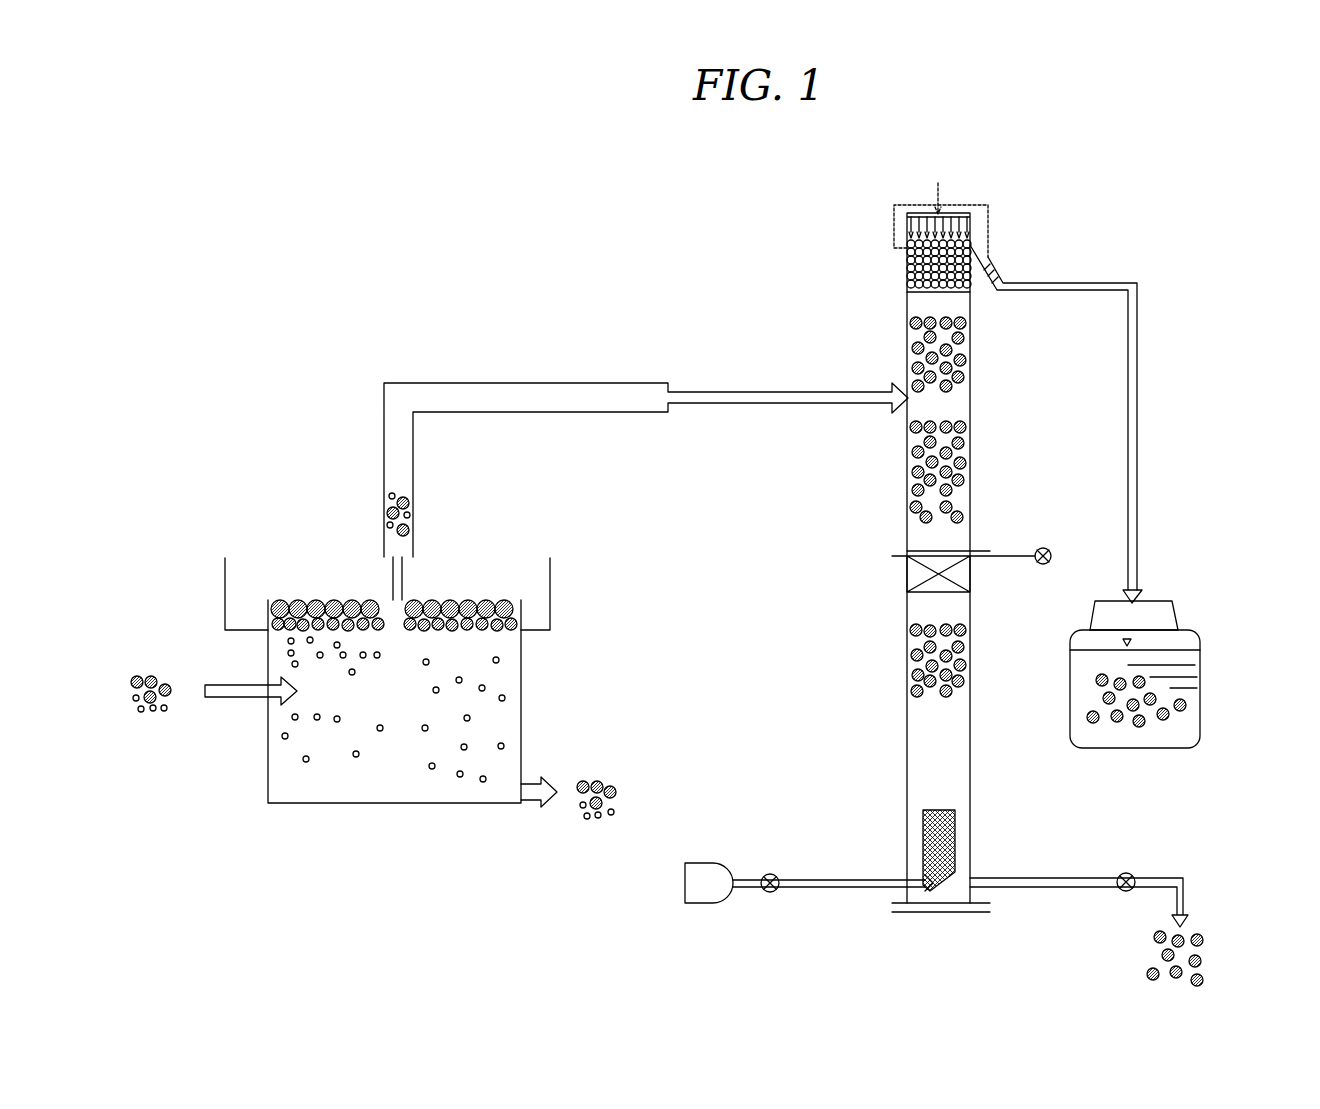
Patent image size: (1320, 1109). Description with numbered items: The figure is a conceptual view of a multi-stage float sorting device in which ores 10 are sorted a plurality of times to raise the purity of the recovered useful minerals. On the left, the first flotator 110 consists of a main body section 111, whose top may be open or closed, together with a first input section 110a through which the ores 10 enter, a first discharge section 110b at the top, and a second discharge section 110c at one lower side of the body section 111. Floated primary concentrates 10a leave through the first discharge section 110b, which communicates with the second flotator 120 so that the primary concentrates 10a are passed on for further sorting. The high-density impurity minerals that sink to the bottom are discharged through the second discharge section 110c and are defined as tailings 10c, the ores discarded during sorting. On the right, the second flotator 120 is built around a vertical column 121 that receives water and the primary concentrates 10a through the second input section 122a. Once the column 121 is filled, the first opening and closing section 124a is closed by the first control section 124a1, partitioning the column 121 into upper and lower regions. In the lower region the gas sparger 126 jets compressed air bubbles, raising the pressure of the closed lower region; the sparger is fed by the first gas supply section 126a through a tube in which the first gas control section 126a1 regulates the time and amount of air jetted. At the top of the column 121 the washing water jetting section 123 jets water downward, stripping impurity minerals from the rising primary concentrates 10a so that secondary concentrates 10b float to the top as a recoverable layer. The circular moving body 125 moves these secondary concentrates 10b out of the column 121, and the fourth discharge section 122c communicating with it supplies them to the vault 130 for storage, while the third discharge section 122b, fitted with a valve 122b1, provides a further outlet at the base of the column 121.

The ores 10 is at (141, 712).
The primary concentrates 10a is at (409, 503).
The secondary concentrates 10b is at (1117, 722).
The tailings 10c is at (616, 793).
The first flotator 110 is at (297, 814).
The first input section 110a is at (217, 686).
The first discharge section 110b is at (403, 576).
The second discharge section 110c is at (545, 780).
The main body section 111 is at (522, 670).
The second flotator 120 is at (1061, 180).
The column 121 is at (907, 311).
The second input section 122a is at (871, 403).
The third discharge section 122b is at (1076, 877).
The discharge valve 122b1 is at (1122, 893).
The fourth discharge section 122c is at (1137, 315).
The washing water jetting section 123 is at (907, 219).
The first opening and closing section 124a is at (907, 576).
The first control section 124a1 is at (1046, 548).
The circular moving body 125 is at (963, 205).
The gas sparger 126 is at (958, 841).
The first gas supply section 126a is at (685, 882).
The first gas control section 126a1 is at (770, 873).
The vault 130 is at (1203, 702).